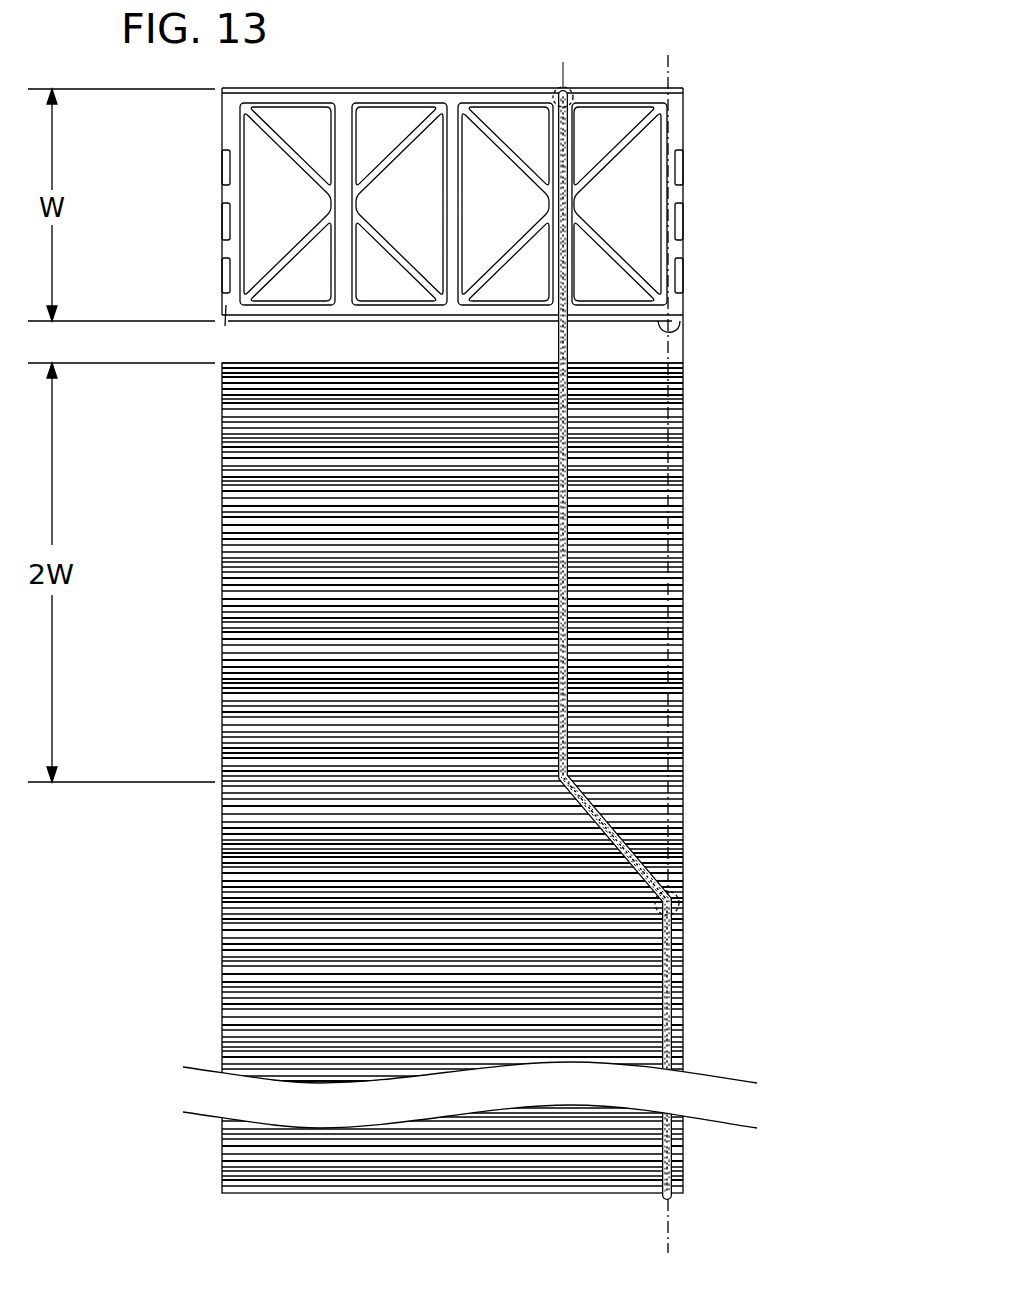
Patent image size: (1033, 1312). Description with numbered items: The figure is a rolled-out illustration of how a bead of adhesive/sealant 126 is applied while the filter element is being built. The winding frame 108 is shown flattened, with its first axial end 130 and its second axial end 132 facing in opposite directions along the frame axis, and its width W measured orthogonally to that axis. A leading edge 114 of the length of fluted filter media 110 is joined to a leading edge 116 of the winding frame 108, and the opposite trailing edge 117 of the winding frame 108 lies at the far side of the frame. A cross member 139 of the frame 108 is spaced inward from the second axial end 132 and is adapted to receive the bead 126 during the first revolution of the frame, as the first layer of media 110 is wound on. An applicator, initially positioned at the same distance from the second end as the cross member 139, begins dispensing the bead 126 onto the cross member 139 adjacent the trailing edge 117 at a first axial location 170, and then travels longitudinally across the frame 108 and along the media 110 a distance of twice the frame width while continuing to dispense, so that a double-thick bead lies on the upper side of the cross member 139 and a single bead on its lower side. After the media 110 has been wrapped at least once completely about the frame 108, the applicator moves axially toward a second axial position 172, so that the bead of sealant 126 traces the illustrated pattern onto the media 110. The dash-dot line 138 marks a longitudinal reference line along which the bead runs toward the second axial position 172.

The winding frame 108 is at (631, 100).
The fluted filter media 110 is at (222, 488).
The leading edge of the fluted filter media 114 is at (237, 362).
The leading edge of the winding frame 116 is at (682, 325).
The trailing edge of the winding frame 117 is at (237, 88).
The bead of adhesive/sealant 126 is at (568, 505).
The first axial end of the winding frame 130 is at (198, 124).
The second axial end of the winding frame 132 is at (707, 123).
The longitudinal axis 138 is at (668, 70).
The cross member 139 is at (563, 75).
The first axial location 170 is at (555, 100).
The second axial position 172 is at (680, 903).